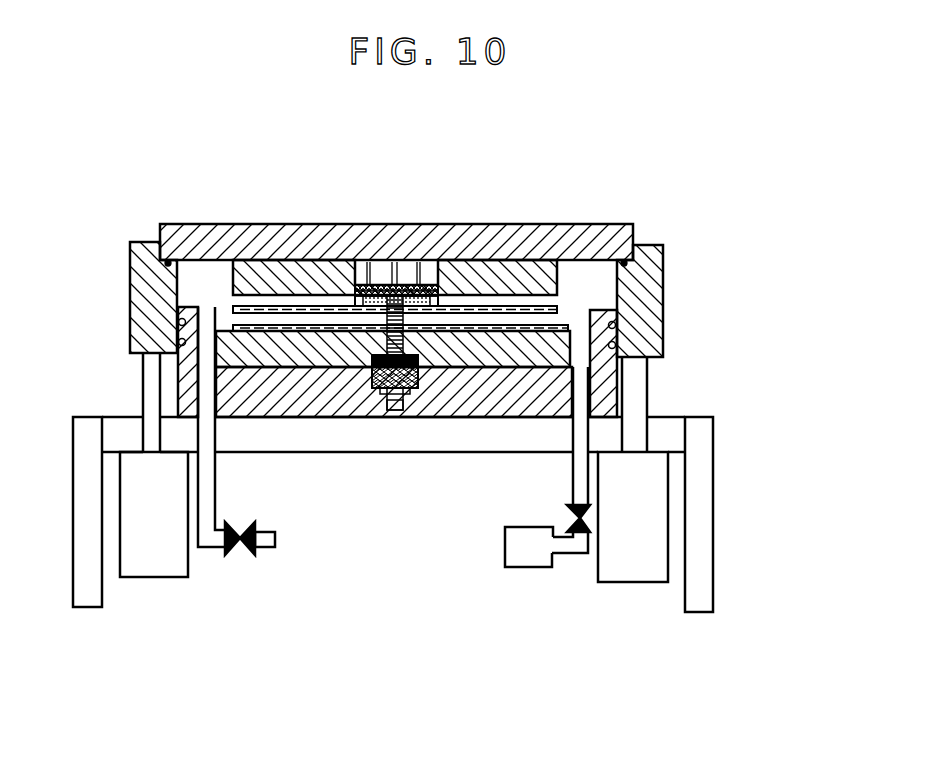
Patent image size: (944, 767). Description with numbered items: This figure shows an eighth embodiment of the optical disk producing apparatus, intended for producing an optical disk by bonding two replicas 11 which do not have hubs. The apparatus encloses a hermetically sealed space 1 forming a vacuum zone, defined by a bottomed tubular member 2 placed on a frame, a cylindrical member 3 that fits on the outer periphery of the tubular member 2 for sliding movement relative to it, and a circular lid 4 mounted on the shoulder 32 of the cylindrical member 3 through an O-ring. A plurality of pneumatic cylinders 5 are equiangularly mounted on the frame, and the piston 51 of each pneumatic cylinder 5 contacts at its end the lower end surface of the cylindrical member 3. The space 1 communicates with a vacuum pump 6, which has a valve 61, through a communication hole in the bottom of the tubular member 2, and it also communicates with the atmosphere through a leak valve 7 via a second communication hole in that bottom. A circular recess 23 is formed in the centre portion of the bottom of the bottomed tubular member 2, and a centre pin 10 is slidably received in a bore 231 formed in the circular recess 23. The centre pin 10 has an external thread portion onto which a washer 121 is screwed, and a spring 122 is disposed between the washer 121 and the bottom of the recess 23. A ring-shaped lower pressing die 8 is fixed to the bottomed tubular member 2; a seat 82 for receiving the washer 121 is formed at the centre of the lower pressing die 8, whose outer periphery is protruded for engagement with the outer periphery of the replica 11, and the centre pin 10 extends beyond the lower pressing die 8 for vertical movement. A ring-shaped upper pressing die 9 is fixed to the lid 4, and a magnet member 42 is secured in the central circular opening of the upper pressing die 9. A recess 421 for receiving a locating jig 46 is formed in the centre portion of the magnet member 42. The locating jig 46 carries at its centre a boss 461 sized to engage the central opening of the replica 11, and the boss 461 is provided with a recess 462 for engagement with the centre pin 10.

The hermetically sealed space 1 is at (192, 292).
The bottomed tubular member 2 is at (238, 392).
The cylindrical member 3 is at (664, 280).
The shoulder 32 is at (626, 262).
The circular lid 4 is at (574, 227).
The magnet member 42 is at (366, 286).
The recess 421 is at (333, 308).
The locating jig 46 is at (414, 288).
The boss 461 is at (396, 288).
The recess 462 is at (430, 297).
The pneumatic cylinder 5 is at (157, 578).
The piston 51 is at (142, 367).
The vacuum pump 6 is at (528, 568).
The valve 61 is at (567, 510).
The leak valve 7 is at (250, 556).
The lower pressing die 8 is at (527, 350).
The seat 82 is at (362, 372).
The upper pressing die 9 is at (252, 280).
The centre pin 10 is at (397, 384).
The replica 11 is at (488, 327).
The washer 121 is at (378, 362).
The spring 122 is at (390, 404).
The circular recess 23 is at (420, 381).
The bore 231 is at (403, 396).